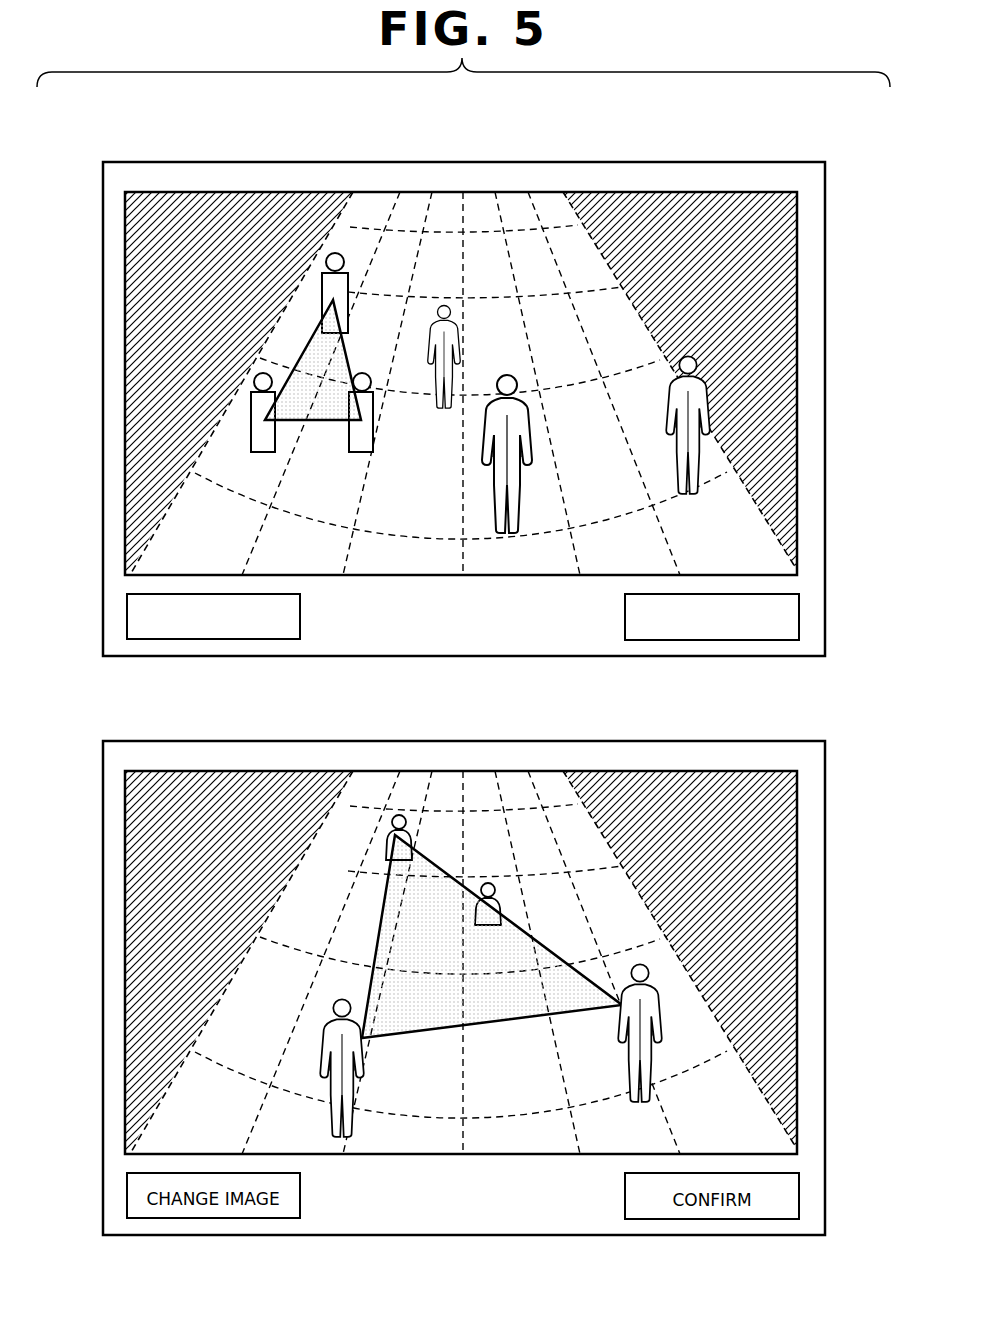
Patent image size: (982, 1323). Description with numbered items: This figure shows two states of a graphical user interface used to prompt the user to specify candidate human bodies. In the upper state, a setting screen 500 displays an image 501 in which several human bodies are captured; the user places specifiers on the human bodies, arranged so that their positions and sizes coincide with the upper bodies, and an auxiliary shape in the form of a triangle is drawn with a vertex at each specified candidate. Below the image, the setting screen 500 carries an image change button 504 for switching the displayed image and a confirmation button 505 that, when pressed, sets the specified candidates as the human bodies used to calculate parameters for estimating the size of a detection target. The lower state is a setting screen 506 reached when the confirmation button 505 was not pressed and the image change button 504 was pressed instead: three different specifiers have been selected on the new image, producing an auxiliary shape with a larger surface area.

The setting screen 500 is at (150, 161).
The image 501 is at (669, 191).
The image change button 504 is at (127, 614).
The confirmation button 505 is at (799, 617).
The setting screen 506 is at (150, 740).